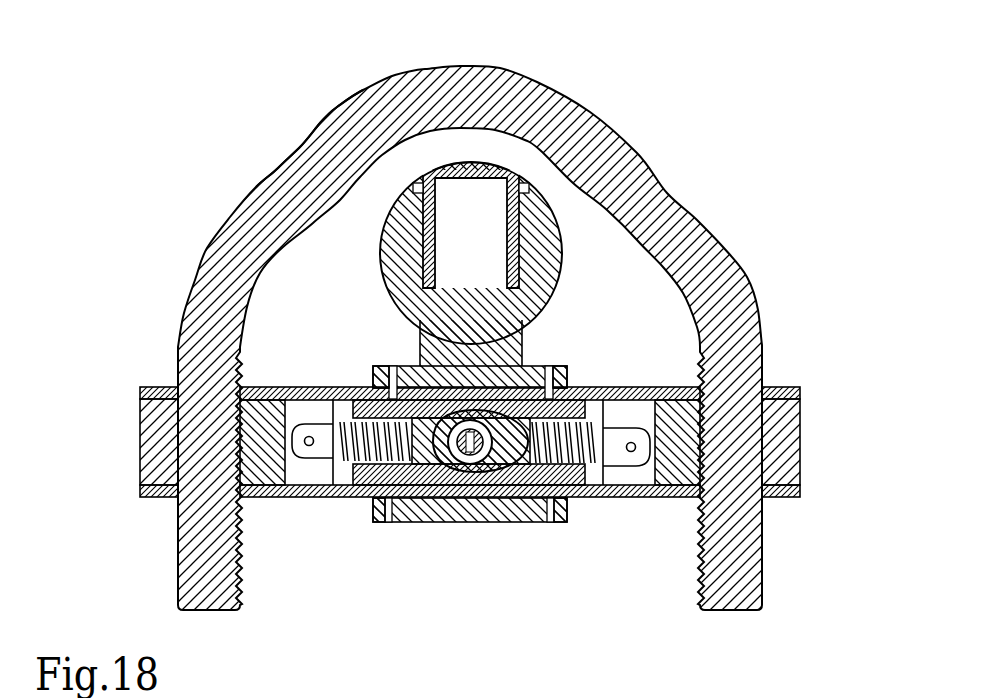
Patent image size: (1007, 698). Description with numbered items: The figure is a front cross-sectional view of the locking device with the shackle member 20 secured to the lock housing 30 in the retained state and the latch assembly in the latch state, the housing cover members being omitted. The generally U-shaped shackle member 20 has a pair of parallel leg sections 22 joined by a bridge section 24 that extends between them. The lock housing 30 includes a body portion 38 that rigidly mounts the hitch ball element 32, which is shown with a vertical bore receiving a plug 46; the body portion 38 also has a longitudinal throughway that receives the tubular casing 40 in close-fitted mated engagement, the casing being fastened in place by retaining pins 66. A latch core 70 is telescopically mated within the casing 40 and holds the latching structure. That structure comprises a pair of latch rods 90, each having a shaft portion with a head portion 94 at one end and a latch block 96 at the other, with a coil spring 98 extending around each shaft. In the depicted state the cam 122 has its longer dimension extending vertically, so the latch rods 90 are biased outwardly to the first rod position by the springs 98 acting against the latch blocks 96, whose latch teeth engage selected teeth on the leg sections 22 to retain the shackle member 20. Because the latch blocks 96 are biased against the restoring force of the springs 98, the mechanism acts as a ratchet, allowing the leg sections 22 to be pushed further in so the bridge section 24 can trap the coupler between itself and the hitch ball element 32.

The shackle member 20 is at (638, 153).
The leg sections 22 is at (177, 355).
The bridge section 24 is at (321, 123).
The lock housing 30 is at (447, 530).
The hitch ball element 32 is at (560, 262).
The body portion 38 is at (455, 301).
The tubular casing 40 is at (780, 500).
The plug 46 is at (480, 162).
The retaining pins 66 is at (390, 365).
The latch core 70 is at (795, 440).
The latch rods 90 is at (348, 388).
The head portion 94 is at (497, 410).
The latch block 96 is at (254, 497).
The coil spring 98 is at (345, 497).
The cam 122 is at (477, 523).